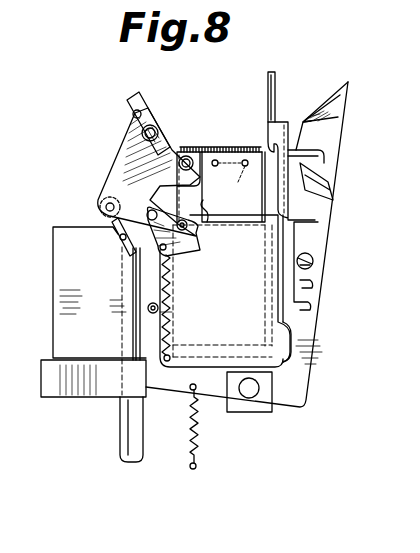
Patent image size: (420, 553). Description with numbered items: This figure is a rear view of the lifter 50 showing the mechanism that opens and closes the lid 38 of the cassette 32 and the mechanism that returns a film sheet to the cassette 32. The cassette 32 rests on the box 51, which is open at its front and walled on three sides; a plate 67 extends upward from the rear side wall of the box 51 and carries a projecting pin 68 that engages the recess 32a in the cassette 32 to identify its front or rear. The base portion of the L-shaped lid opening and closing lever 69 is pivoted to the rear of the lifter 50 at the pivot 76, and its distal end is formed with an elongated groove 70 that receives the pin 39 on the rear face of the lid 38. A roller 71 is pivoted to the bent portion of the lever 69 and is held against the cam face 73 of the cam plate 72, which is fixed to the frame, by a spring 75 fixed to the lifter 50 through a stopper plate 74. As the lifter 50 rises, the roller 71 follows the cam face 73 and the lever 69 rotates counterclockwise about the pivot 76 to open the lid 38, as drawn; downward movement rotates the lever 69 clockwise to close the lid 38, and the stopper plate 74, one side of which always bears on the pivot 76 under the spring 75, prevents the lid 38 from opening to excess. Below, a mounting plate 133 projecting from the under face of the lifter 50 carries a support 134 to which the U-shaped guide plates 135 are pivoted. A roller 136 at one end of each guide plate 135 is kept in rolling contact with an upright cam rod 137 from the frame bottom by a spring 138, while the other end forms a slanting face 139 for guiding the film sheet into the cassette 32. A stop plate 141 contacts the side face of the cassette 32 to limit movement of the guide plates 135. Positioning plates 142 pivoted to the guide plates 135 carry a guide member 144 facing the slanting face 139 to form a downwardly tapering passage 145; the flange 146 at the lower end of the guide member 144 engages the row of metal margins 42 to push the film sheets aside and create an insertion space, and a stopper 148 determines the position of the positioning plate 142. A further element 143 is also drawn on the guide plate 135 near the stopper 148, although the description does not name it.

The lid 38 is at (134, 96).
The pin 39 is at (156, 130).
The metal margins 42 is at (225, 145).
The cassette 32 is at (191, 153).
The recess 32a is at (233, 187).
The pin 68 is at (246, 159).
The plate 67 is at (205, 212).
The lid opening and closing lever 69 is at (116, 162).
The elongated groove 70 is at (134, 115).
The roller 71 is at (98, 204).
The cam plate 72 is at (56, 259).
The cam face 73 is at (118, 241).
The stopper plate 74 is at (186, 258).
The spring 75 is at (172, 312).
The pivot 76 is at (194, 251).
The lifter 50 is at (305, 351).
The box 51 is at (282, 318).
The mounting plate 133 is at (272, 413).
The support 134 is at (249, 399).
The guide plates 135 is at (306, 390).
The roller 136 is at (133, 305).
The cam rod 137 is at (120, 434).
The spring 138 is at (185, 437).
The slanting face 139 is at (332, 105).
The stop plate 141 is at (331, 196).
The positioning plates 142 is at (288, 122).
The screw 143 is at (314, 260).
The guide member 144 is at (275, 80).
The passage 145 is at (338, 120).
The flange 146 is at (322, 160).
The stopper 148 is at (313, 285).